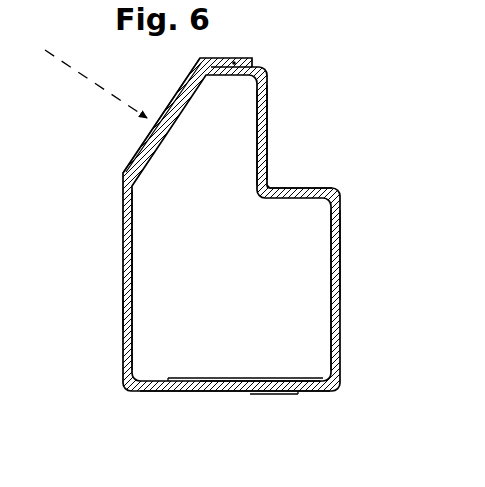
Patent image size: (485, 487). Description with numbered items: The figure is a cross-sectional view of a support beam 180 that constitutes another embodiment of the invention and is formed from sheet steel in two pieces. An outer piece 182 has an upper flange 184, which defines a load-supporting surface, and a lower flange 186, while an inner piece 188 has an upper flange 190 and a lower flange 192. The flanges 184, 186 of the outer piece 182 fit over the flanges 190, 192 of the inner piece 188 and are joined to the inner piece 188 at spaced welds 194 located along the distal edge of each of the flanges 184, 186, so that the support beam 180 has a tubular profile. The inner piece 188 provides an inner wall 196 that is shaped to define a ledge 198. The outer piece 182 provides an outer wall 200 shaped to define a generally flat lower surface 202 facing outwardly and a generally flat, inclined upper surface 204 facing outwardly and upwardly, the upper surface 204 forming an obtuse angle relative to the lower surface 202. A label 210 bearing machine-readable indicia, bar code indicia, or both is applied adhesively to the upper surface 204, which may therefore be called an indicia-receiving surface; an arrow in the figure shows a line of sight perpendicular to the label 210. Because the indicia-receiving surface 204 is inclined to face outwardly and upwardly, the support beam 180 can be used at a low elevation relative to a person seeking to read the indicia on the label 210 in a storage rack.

The support beam 180 is at (110, 237).
The outer piece 182 is at (136, 225).
The upper flange 184 is at (213, 57).
The lower flange 186 is at (240, 396).
The inner piece 188 is at (329, 262).
The upper flange 190 is at (234, 64).
The lower flange 192 is at (262, 381).
The spaced welds 194 is at (245, 63).
The inner wall 196 is at (340, 225).
The ledge 198 is at (292, 170).
The outer wall 200 is at (133, 265).
The lower surface 202 is at (123, 307).
The upper surface 204 is at (139, 150).
The label 210 is at (162, 107).